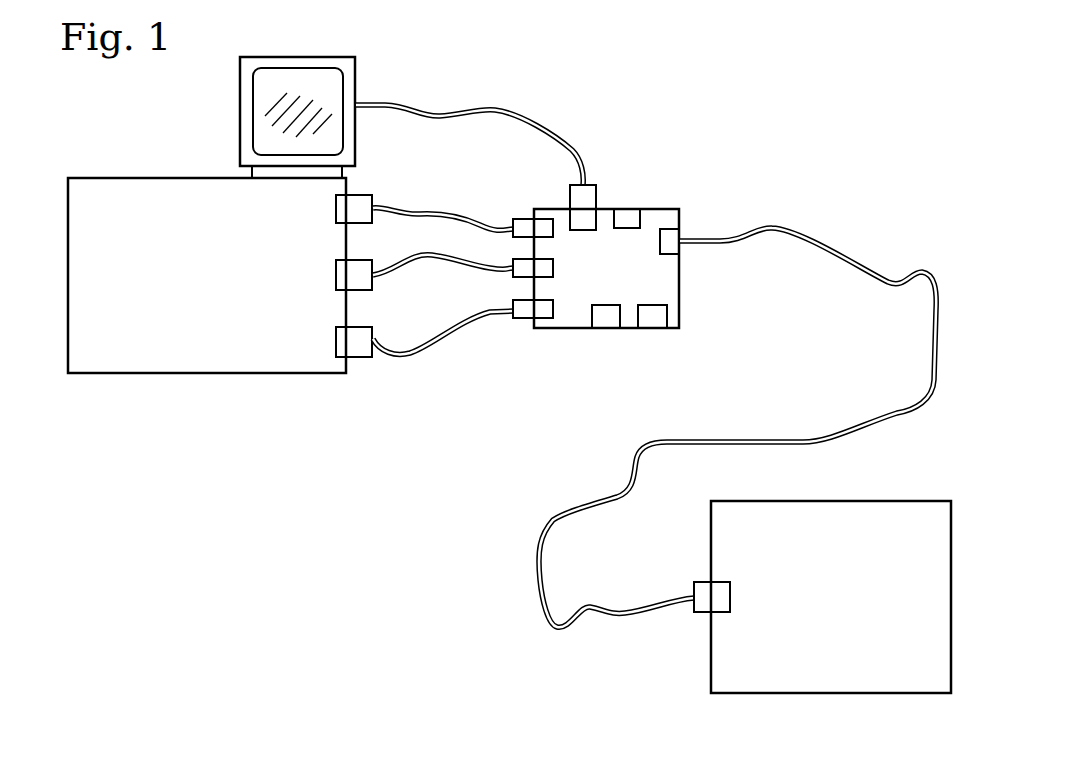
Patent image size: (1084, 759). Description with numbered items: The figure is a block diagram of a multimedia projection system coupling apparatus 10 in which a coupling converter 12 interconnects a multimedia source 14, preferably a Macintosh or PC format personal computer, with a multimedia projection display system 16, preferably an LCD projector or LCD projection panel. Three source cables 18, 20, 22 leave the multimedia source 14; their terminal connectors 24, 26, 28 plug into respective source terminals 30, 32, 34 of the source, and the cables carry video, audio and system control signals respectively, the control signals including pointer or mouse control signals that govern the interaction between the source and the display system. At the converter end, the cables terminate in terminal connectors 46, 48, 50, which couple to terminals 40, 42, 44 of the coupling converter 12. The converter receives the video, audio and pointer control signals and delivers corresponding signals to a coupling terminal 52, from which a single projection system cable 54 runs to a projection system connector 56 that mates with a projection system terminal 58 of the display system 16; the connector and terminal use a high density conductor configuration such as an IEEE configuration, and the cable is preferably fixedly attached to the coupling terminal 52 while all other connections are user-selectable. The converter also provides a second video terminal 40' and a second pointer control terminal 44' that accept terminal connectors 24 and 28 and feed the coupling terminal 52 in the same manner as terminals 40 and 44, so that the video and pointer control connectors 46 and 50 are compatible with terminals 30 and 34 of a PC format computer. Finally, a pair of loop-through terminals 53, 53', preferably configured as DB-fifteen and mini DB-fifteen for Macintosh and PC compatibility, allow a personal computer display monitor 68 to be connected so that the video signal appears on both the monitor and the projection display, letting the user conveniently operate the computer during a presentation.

The multimedia projection system coupling apparatus 10 is at (762, 63).
The coupling converter 12 is at (681, 262).
The multimedia source 14 is at (172, 376).
The multimedia projection display system 16 is at (800, 500).
The source cable 18 is at (420, 212).
The source cable 20 is at (425, 258).
The source cable 22 is at (420, 353).
The terminal connector 24 is at (365, 195).
The terminal connector 26 is at (360, 260).
The terminal connector 28 is at (360, 328).
The source terminal 30 is at (336, 215).
The source terminal 32 is at (336, 278).
The source terminal 34 is at (336, 348).
The terminal 40 is at (584, 243).
The video terminal 40' is at (617, 346).
The terminal 42 is at (555, 268).
The terminal 44 is at (562, 340).
The pointer control terminal 44' is at (665, 339).
The terminal connector 46 is at (523, 222).
The terminal connector 48 is at (522, 268).
The terminal connector 50 is at (523, 312).
The coupling terminal 52 is at (672, 230).
The loop-through terminal 53 is at (608, 189).
The loop-through terminal 53' is at (669, 200).
The projection system cable 54 is at (898, 410).
The projection system connector 56 is at (701, 614).
The projection system terminal 58 is at (732, 598).
The personal computer display monitor 68 is at (357, 70).